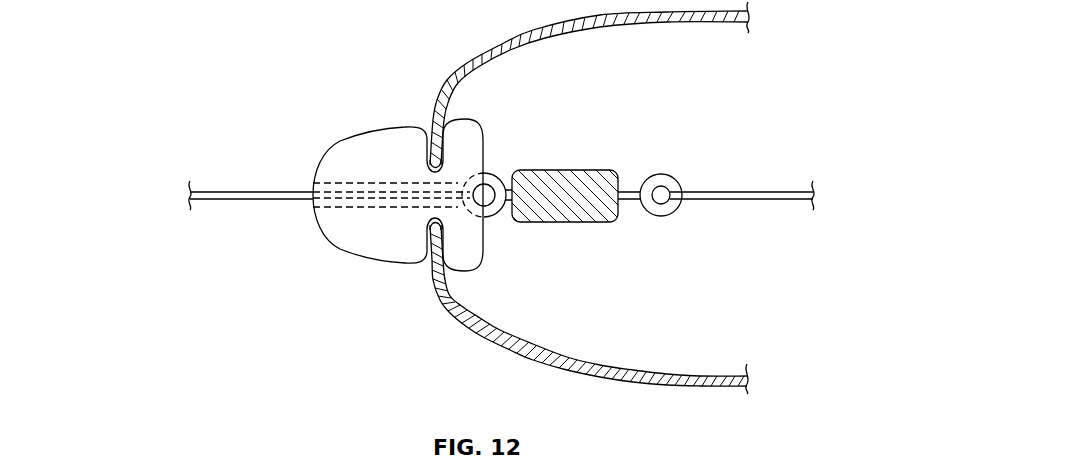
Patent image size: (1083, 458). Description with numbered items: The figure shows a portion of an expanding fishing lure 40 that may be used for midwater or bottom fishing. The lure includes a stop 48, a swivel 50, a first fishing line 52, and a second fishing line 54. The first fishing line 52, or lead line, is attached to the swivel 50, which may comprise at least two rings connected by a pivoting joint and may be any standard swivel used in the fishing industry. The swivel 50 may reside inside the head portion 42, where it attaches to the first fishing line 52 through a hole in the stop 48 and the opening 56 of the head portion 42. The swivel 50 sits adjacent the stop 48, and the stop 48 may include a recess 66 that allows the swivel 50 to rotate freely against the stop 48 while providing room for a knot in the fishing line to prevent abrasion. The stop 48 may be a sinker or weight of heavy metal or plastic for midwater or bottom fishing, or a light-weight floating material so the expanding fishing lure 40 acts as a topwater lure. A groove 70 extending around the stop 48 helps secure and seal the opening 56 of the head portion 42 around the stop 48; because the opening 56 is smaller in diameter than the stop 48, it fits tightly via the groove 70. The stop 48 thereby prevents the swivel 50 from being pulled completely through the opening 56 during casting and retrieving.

The expanding fishing lure 40 is at (471, 26).
The head portion 42 is at (697, 371).
The stop 48 is at (363, 139).
The swivel 50 is at (562, 170).
The first fishing line 52 is at (272, 192).
The second fishing line 54 is at (745, 191).
The opening 56 is at (430, 230).
The recess 66 is at (485, 218).
The groove 70 is at (443, 163).